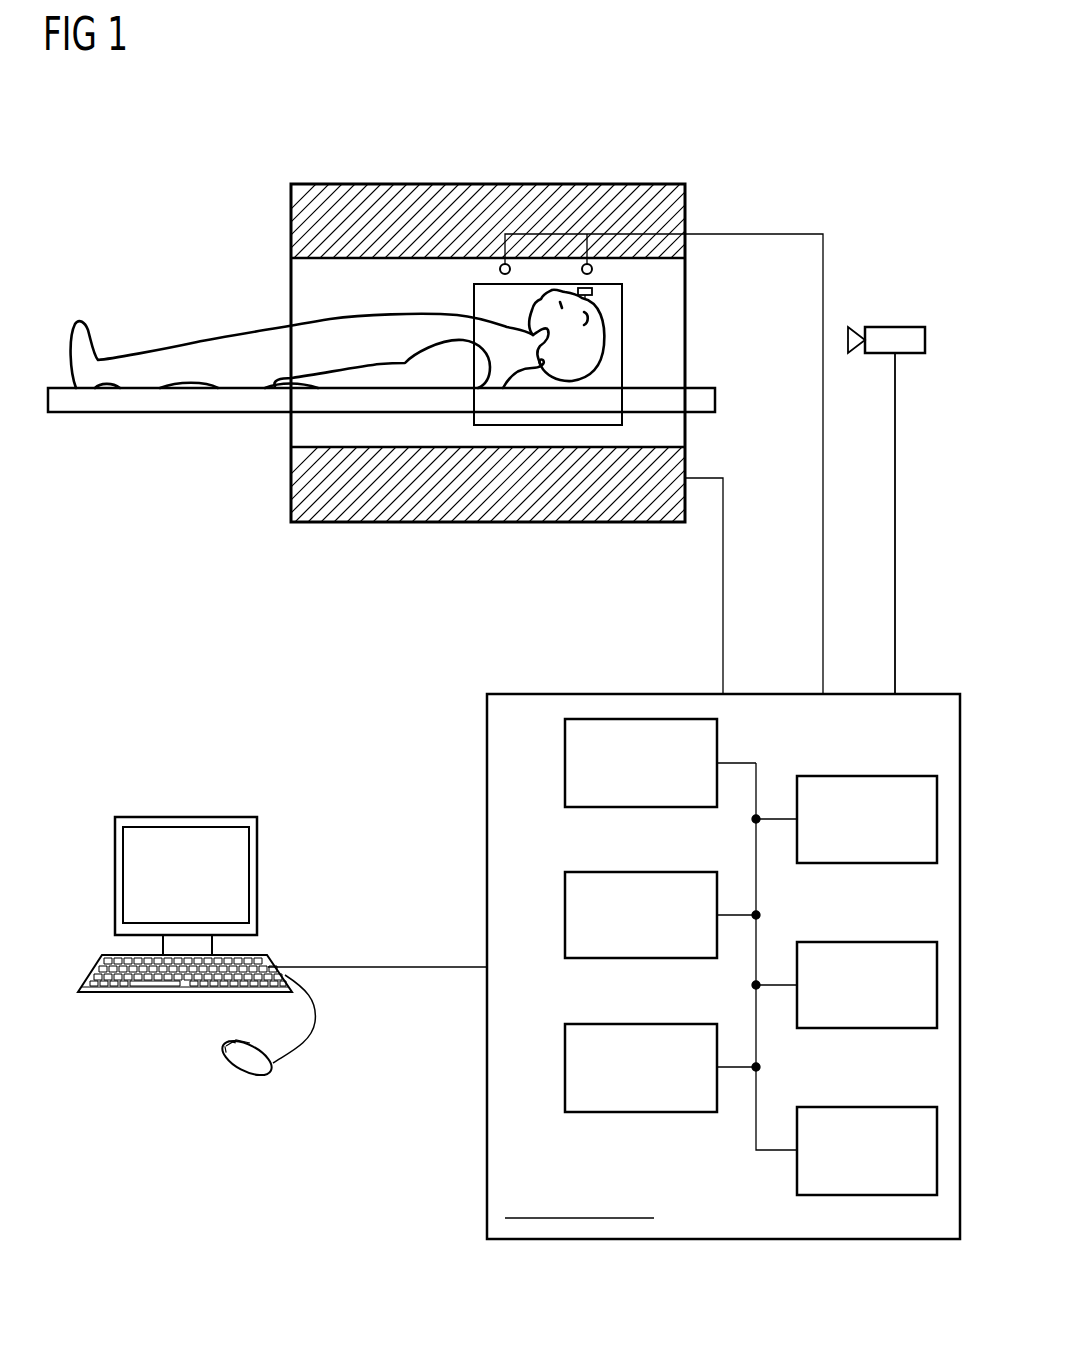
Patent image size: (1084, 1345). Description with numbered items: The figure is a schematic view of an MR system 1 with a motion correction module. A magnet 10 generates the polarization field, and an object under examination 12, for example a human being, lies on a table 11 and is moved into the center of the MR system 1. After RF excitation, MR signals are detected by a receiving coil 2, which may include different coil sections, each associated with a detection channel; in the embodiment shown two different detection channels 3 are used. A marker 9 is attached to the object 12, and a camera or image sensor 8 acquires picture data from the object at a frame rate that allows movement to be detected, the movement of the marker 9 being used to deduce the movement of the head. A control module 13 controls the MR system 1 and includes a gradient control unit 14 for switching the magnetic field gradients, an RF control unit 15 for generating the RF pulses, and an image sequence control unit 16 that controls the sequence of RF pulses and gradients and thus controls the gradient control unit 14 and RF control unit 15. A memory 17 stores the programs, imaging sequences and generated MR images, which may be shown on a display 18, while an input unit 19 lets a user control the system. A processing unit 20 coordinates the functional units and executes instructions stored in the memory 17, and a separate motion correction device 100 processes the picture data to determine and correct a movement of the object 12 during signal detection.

The MR system 1 is at (700, 112).
The receiving coil 2 is at (622, 351).
The detection channels 3 is at (499, 269).
The camera or image sensor 8 is at (895, 327).
The marker 9 is at (603, 298).
The magnet 10 is at (492, 184).
The table 11 is at (62, 388).
The object under examination 12 is at (78, 322).
The control module 13 is at (770, 694).
The gradient control unit 14 is at (565, 764).
The RF control unit 15 is at (565, 917).
The image sequence control unit 16 is at (870, 776).
The memory 17 is at (565, 1067).
The display 18 is at (185, 817).
The input unit 19 is at (183, 992).
The processing unit 20 is at (870, 942).
The motion correction device 100 is at (870, 1107).